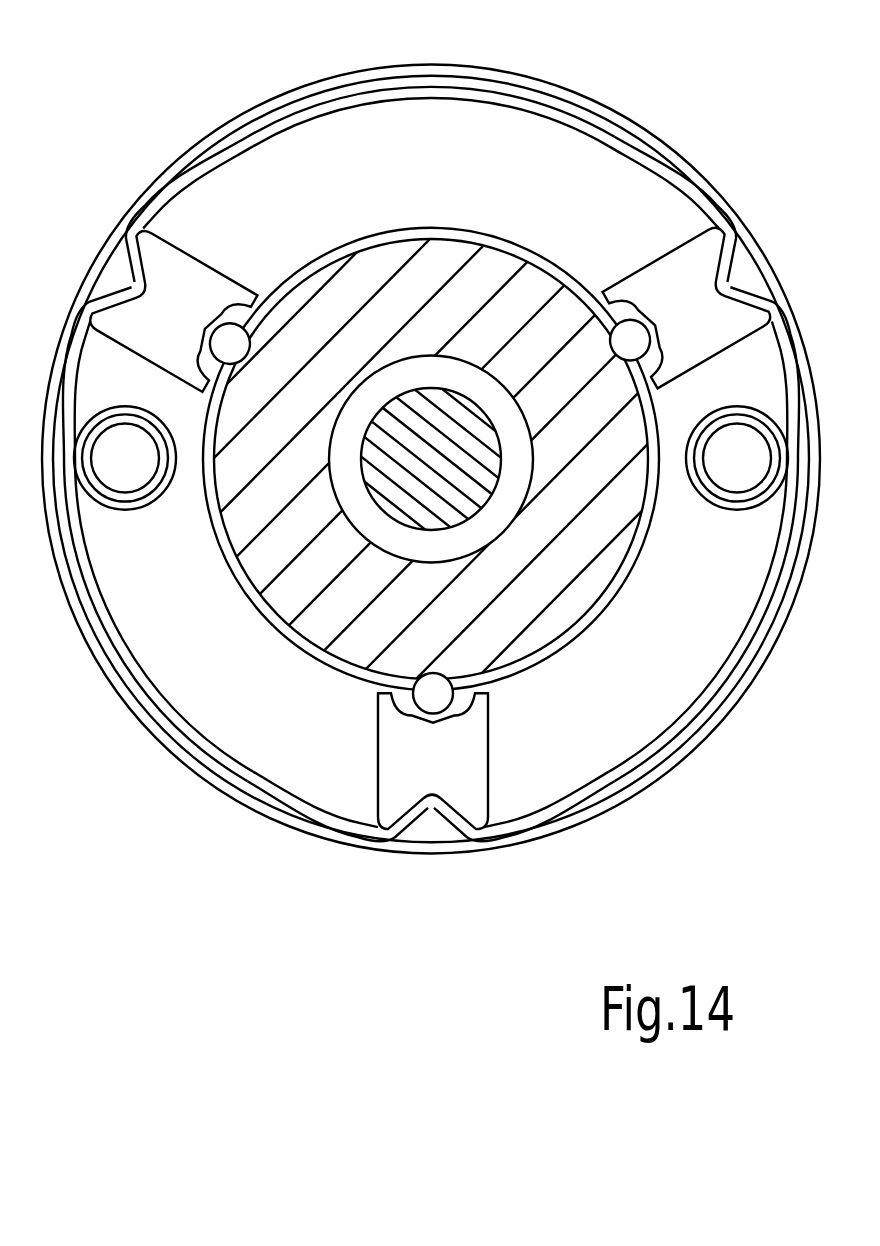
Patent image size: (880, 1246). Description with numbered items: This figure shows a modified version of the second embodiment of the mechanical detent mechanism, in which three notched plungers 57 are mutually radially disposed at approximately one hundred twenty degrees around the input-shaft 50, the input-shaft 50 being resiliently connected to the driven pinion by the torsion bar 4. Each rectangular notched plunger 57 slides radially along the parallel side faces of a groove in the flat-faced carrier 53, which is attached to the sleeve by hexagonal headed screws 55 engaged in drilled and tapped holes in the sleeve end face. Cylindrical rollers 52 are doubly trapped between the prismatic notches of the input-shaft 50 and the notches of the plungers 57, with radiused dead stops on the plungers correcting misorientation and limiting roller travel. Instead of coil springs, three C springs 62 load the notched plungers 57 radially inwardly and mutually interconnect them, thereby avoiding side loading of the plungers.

The torsion bar 4 is at (382, 494).
The input-shaft 50 is at (478, 265).
The cylindrical rollers 52 is at (233, 334).
The carrier 53 is at (622, 724).
The hexagonal headed screws 55 is at (125, 463).
The notched plungers 57 is at (178, 271).
The C springs 62 is at (428, 85).